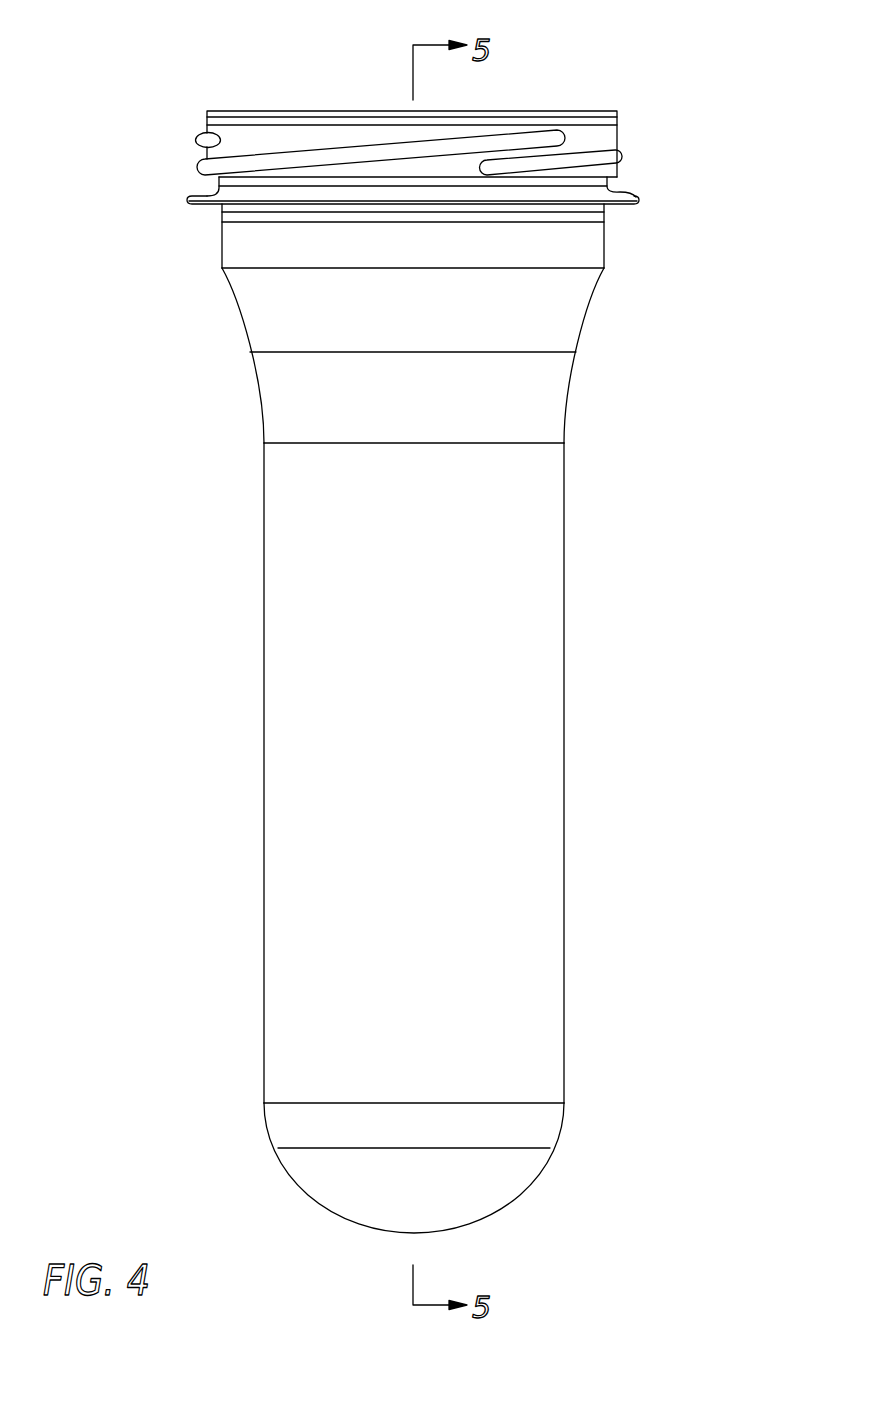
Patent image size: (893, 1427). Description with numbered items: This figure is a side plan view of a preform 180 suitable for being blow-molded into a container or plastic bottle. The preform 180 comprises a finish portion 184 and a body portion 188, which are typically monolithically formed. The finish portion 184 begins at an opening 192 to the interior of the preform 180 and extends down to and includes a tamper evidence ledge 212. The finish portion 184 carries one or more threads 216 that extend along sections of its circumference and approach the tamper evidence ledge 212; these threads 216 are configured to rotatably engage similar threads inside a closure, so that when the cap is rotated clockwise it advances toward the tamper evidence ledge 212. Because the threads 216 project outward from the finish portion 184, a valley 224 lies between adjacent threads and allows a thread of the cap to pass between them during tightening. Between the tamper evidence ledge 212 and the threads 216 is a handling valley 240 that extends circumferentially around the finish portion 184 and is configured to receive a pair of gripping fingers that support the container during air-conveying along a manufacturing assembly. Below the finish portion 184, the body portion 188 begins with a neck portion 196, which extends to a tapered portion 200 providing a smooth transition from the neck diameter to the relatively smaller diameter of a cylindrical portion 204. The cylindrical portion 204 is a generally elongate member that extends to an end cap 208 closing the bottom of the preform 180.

The preform 180 is at (648, 933).
The finish portion 184 is at (162, 105).
The body portion 188 is at (164, 1230).
The opening 192 is at (340, 111).
The neck portion 196 is at (222, 216).
The tapered portion 200 is at (588, 313).
The cylindrical portion 204 is at (263, 906).
The end cap 208 is at (383, 1230).
The tamper evidence ledge 212 is at (636, 203).
The threads 216 is at (292, 158).
The valley 224 is at (196, 134).
The handling valley 240 is at (609, 188).